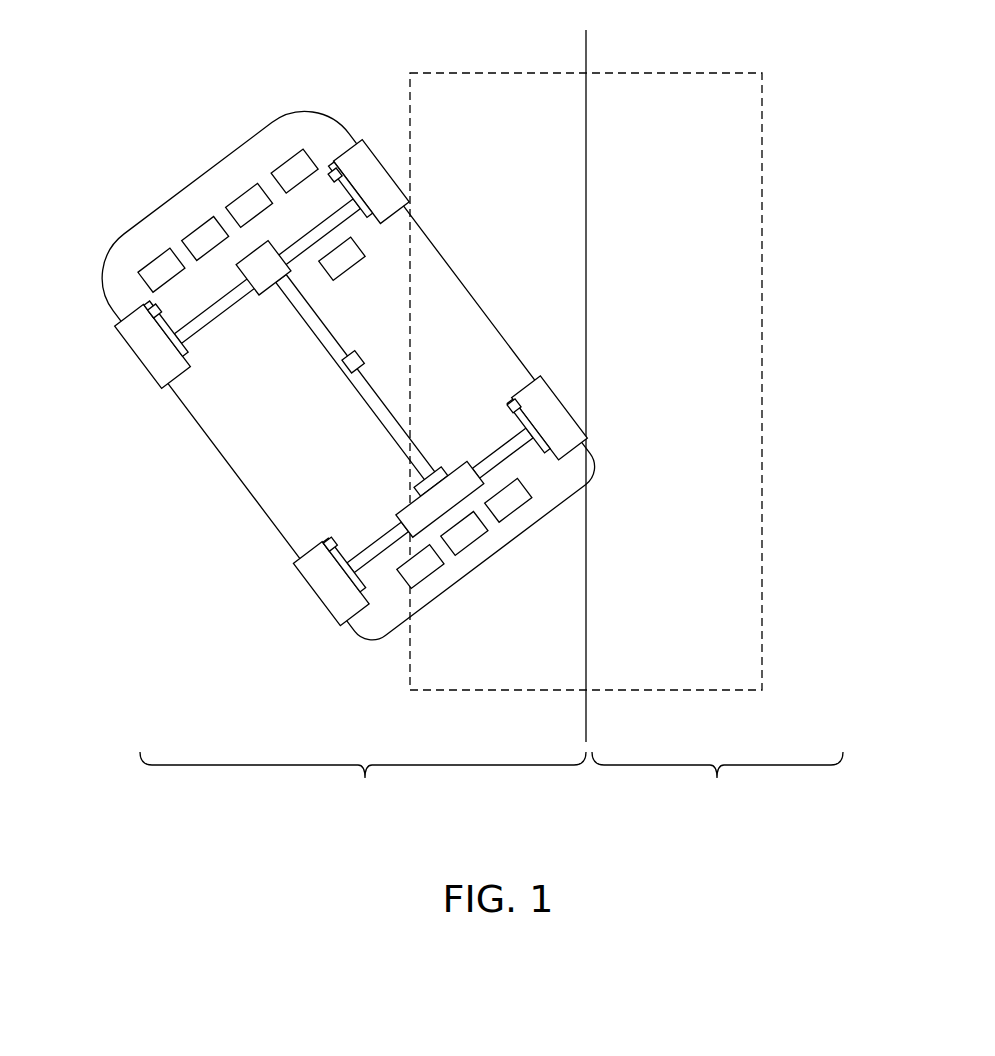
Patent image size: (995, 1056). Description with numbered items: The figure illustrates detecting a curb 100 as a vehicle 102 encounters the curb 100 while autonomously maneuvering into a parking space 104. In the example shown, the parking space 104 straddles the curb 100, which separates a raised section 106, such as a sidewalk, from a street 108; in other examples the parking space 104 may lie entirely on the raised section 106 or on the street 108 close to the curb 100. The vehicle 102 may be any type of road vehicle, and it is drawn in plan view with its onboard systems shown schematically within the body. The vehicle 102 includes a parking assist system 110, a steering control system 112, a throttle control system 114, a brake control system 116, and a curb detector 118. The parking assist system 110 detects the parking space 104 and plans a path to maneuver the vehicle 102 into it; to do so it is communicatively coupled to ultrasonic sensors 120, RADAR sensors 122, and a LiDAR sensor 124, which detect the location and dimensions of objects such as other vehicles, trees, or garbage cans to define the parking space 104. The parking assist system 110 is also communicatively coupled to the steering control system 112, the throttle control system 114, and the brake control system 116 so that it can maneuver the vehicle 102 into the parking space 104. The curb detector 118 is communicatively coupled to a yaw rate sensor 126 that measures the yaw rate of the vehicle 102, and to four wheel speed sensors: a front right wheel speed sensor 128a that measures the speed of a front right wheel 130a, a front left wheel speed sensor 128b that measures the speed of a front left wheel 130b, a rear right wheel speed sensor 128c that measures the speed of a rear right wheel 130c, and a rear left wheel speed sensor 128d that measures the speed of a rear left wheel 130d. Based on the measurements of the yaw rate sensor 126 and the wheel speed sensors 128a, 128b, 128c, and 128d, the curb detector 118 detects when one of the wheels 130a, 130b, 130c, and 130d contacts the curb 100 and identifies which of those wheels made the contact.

The curb 100 is at (586, 40).
The vehicle 102 is at (206, 172).
The parking space 104 is at (760, 72).
The raised section 106 is at (717, 779).
The street 108 is at (363, 779).
The parking assist system 110 is at (155, 260).
The steering control system 112 is at (202, 226).
The throttle control system 114 is at (238, 198).
The brake control system 116 is at (346, 271).
The curb detector 118 is at (286, 162).
The ultrasonic sensors 120 is at (427, 576).
The RADAR sensors 122 is at (471, 542).
The LiDAR sensor 124 is at (515, 509).
The yaw rate sensor 126 is at (344, 373).
The front right wheel speed sensor 128a is at (334, 170).
The front left wheel speed sensor 128b is at (155, 307).
The rear right wheel speed sensor 128c is at (512, 401).
The rear left wheel speed sensor 128d is at (329, 539).
The front right wheel 130a is at (372, 170).
The front left wheel 130b is at (152, 369).
The rear right wheel 130c is at (551, 400).
The rear left wheel 130d is at (320, 591).